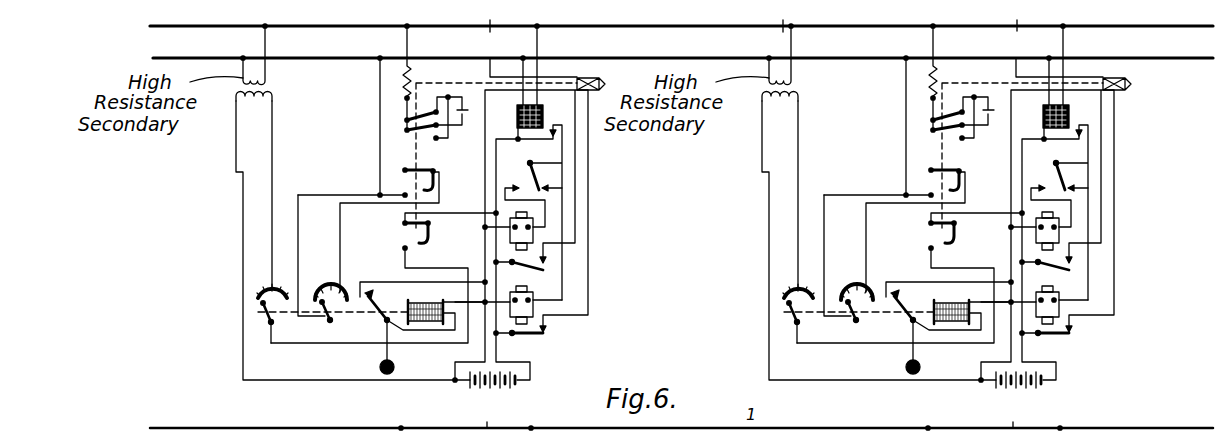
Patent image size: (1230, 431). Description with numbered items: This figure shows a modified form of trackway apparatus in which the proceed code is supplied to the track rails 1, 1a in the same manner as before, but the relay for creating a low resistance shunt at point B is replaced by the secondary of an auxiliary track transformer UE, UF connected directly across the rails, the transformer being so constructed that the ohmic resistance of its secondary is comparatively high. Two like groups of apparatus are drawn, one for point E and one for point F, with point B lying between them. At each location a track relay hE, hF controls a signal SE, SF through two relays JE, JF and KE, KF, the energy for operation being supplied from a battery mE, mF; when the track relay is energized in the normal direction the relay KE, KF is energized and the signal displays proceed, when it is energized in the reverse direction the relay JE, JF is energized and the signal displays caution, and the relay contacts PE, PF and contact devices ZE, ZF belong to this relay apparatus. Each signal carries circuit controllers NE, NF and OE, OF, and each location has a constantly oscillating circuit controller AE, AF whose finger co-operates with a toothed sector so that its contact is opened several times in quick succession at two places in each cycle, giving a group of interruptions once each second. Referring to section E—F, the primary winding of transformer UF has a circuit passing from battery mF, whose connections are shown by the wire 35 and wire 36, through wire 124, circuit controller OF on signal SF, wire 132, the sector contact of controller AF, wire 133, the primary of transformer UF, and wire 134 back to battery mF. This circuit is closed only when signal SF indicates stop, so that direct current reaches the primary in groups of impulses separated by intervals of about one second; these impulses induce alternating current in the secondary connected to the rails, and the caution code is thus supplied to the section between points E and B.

The track rail 1 is at (888, 26).
The track rail 1a is at (880, 57).
The battery connection conductor 35 is at (956, 371).
The wire 36 is at (1060, 358).
The wire 124 is at (980, 231).
The wire 132 is at (971, 258).
The wire 133 is at (871, 240).
The wire 134 is at (745, 240).
The point E is at (486, 215).
The point B is at (781, 214).
The point F is at (1013, 215).
The auxiliary track transformer UE is at (291, 85).
The auxiliary track transformer UF is at (817, 85).
The relay contact PE is at (402, 123).
The relay contact PF is at (916, 79).
The contact device ZE is at (471, 113).
The contact device ZF is at (980, 128).
The circuit controller NE is at (430, 180).
The circuit controller NF is at (894, 174).
The circuit controller OE is at (420, 237).
The circuit controller OF is at (909, 278).
The track relay hE is at (517, 118).
The track relay hF is at (1042, 81).
The signal SE is at (600, 78).
The signal SF is at (1126, 78).
The relay JE is at (538, 232).
The relay JF is at (1078, 230).
The relay KE is at (545, 306).
The relay KF is at (1063, 311).
The circuit controller AE is at (422, 325).
The circuit controller AF is at (948, 325).
The battery mE is at (500, 386).
The battery mF is at (1022, 370).